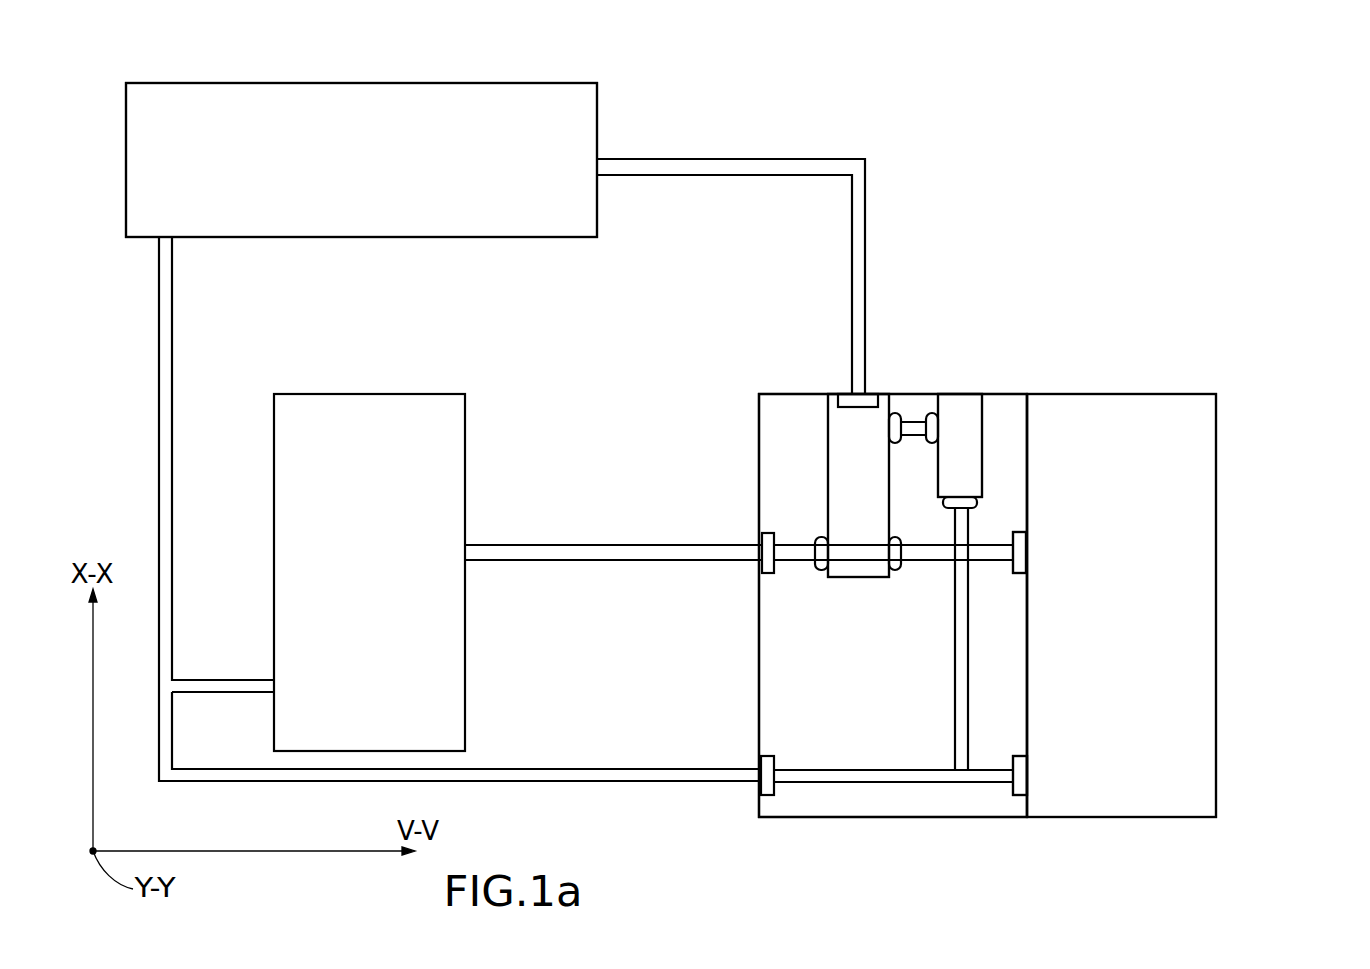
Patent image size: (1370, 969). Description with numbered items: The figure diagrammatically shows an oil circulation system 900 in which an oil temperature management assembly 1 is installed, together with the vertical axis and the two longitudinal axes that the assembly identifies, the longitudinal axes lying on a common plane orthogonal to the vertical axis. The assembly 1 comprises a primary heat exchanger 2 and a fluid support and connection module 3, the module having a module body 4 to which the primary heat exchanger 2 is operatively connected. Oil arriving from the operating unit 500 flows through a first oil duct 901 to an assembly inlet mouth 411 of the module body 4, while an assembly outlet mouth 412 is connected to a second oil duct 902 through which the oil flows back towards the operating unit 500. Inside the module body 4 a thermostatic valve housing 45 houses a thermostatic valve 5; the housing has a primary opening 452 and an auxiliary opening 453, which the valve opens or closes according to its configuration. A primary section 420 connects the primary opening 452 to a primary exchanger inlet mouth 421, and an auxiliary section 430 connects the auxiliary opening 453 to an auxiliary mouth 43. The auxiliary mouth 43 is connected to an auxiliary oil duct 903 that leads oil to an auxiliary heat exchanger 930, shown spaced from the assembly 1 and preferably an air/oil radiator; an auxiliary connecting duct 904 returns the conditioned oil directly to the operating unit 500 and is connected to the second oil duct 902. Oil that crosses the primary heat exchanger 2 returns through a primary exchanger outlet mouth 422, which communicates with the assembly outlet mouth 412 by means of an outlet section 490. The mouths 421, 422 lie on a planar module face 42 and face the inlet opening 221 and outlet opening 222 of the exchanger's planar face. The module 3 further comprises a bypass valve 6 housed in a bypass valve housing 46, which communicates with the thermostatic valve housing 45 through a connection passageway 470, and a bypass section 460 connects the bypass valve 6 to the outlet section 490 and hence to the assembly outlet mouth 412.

The oil temperature management assembly 1 is at (1202, 362).
The primary heat exchanger 2 is at (1121, 605).
The fluid support and connection module 3 is at (970, 316).
The module body 4 is at (768, 392).
The thermostatic valve 5 is at (851, 585).
The bypass valve 6 is at (987, 432).
The planar module face 42 is at (1028, 437).
The auxiliary mouth 43 is at (762, 543).
The thermostatic valve housing 45 is at (842, 505).
The bypass valve housing 46 is at (946, 460).
The inlet opening 221 is at (1019, 552).
The outlet opening 222 is at (1020, 775).
The assembly inlet mouth 411 is at (848, 395).
The assembly outlet mouth 412 is at (762, 782).
The primary section 420 is at (983, 555).
The primary exchanger inlet mouth 421 is at (1028, 548).
The primary exchanger outlet mouth 422 is at (1027, 780).
The auxiliary section 430 is at (790, 553).
The primary opening 452 is at (895, 572).
The auxiliary opening 453 is at (822, 573).
The bypass section 460 is at (963, 707).
The connection passageway 470 is at (913, 423).
The outlet section 490 is at (840, 775).
The operating unit 500 is at (361, 160).
The oil circulation system 900 is at (1163, 172).
The first oil duct 901 is at (722, 168).
The second oil duct 902 is at (547, 776).
The auxiliary oil duct 903 is at (567, 552).
The auxiliary connecting duct 904 is at (207, 683).
The auxiliary heat exchanger 930 is at (369, 572).